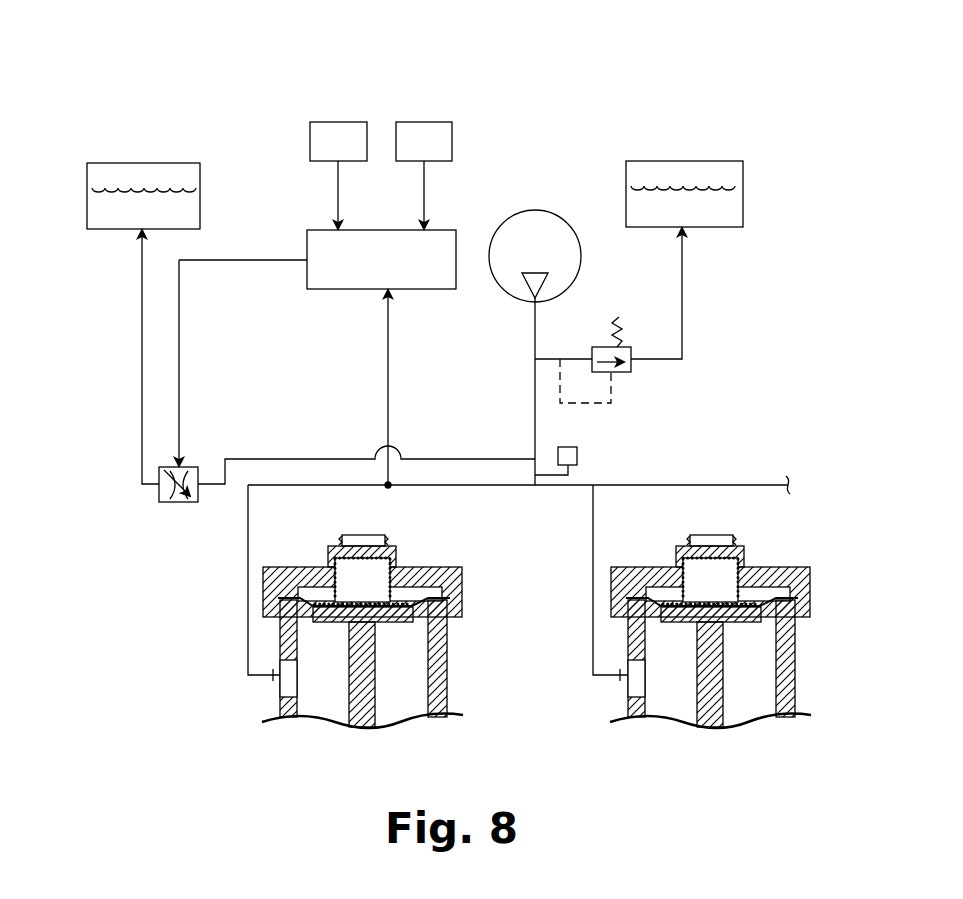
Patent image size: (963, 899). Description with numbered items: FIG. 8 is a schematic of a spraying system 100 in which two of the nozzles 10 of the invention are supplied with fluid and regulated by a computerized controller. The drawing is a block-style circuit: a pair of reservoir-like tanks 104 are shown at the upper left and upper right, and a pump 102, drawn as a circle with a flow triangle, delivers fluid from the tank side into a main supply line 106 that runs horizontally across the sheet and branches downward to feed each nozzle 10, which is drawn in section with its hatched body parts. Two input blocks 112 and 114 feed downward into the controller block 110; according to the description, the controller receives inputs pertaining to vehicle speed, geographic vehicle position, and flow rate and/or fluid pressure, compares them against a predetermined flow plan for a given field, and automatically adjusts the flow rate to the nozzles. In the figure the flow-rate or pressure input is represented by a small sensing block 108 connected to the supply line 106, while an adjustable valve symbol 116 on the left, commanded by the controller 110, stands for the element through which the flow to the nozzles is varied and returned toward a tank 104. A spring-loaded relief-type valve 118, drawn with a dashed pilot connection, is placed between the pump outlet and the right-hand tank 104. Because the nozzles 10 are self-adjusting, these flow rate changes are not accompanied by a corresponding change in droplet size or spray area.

The fuel injection system 100 is at (121, 50).
The fuel tank 104 is at (167, 163).
The sensor input 112 is at (335, 122).
The sensor input 114 is at (420, 122).
The controller 110 is at (442, 230).
The fuel pump 102 is at (537, 210).
The pressure relief valve 118 is at (631, 366).
The pressure sensor 108 is at (578, 447).
The flow control valve 116 is at (198, 467).
The fuel rail / supply line 106 is at (288, 487).
The nozzle 10 is at (434, 560).